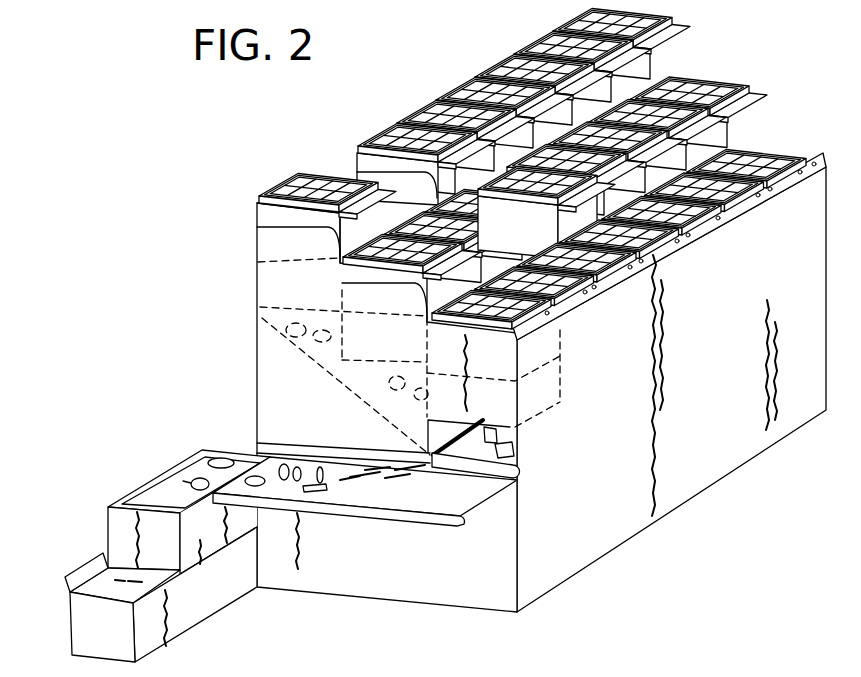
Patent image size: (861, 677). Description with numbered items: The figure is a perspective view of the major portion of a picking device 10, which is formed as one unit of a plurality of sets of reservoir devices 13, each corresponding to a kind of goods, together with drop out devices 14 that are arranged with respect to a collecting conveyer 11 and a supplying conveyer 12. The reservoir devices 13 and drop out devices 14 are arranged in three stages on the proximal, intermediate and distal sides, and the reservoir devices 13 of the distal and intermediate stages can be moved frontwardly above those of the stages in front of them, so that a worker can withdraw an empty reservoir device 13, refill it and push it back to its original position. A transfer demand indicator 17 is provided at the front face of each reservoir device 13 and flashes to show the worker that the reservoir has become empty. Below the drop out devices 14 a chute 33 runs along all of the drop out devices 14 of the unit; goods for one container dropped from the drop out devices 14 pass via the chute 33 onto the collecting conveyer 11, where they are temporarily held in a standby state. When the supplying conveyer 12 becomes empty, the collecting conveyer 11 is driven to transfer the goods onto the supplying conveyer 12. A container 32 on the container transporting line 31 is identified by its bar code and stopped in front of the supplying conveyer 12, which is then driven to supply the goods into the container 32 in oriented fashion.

The picking device 10 is at (762, 86).
The collecting conveyer 11 is at (476, 452).
The supplying conveyer 12 is at (373, 516).
The reservoir device 13 is at (253, 213).
The drop out device 14 is at (258, 263).
The transfer demand indicator 17 is at (375, 181).
The container transporting line 31 is at (105, 588).
The container 32 is at (110, 533).
The chute 33 is at (312, 373).